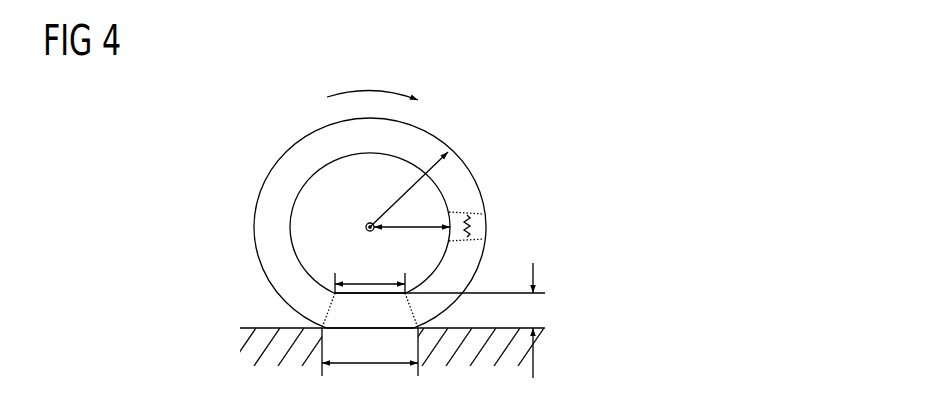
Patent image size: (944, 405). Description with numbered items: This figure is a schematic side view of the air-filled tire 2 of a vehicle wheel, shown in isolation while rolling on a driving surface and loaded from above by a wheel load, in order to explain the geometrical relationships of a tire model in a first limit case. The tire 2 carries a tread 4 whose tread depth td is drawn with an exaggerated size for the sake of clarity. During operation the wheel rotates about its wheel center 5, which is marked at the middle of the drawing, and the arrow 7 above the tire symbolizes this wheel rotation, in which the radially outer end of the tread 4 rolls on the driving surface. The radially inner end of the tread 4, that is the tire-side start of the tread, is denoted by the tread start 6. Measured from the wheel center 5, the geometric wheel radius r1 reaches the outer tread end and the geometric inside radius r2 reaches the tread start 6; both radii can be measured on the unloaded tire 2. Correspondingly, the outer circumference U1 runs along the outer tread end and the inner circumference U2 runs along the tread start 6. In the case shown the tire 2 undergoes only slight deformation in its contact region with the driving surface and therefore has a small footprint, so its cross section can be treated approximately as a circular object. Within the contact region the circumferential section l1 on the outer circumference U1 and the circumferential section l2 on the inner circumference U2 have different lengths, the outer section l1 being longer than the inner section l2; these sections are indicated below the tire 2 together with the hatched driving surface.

The tire 2 is at (263, 128).
The tread 4 is at (263, 199).
The wheel center 5 is at (370, 227).
The tread start 6 is at (290, 240).
The arrow 7 is at (370, 88).
The outer circumference U1 is at (440, 119).
The inner circumference U2 is at (359, 176).
The geometric wheel radius r1 is at (409, 189).
The geometric inside radius r2 is at (429, 222).
The circumferential section on the outer circumference l1 is at (370, 352).
The circumferential section on the inner circumference l2 is at (433, 293).
The tread depth td is at (545, 320).